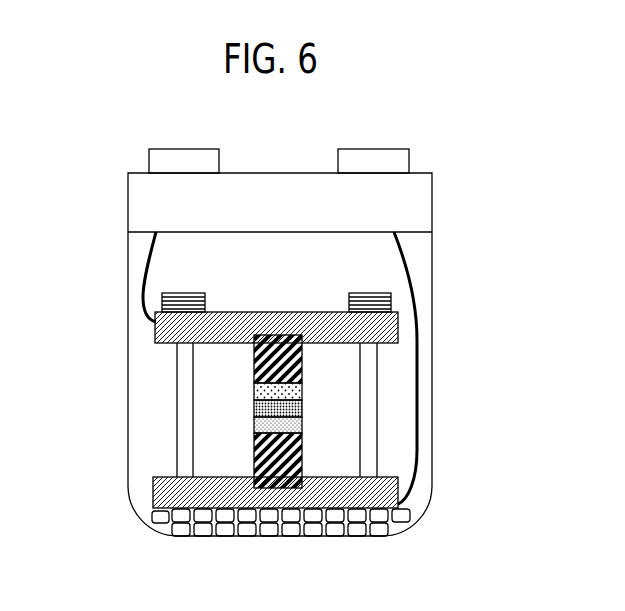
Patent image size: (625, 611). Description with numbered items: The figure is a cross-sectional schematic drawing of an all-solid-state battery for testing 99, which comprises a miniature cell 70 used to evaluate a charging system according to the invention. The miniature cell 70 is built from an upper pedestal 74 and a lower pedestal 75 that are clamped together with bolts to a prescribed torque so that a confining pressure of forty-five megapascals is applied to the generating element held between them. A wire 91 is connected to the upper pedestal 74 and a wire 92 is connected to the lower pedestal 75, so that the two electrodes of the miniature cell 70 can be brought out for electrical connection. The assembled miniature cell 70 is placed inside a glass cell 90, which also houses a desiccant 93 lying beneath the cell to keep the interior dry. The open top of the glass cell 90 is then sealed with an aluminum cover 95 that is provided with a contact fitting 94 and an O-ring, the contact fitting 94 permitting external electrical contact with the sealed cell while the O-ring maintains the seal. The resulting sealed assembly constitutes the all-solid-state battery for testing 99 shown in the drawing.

The all-solid-state battery for testing 99 is at (398, 110).
The glass cell 90 is at (432, 352).
The aluminum cover 95 is at (128, 203).
The contact fitting 94 is at (150, 162).
The wire 91 is at (147, 281).
The wire 92 is at (417, 265).
The miniature cell 70 is at (397, 409).
The upper pedestal 74 is at (153, 333).
The lower pedestal 75 is at (153, 492).
The desiccant 93 is at (415, 520).